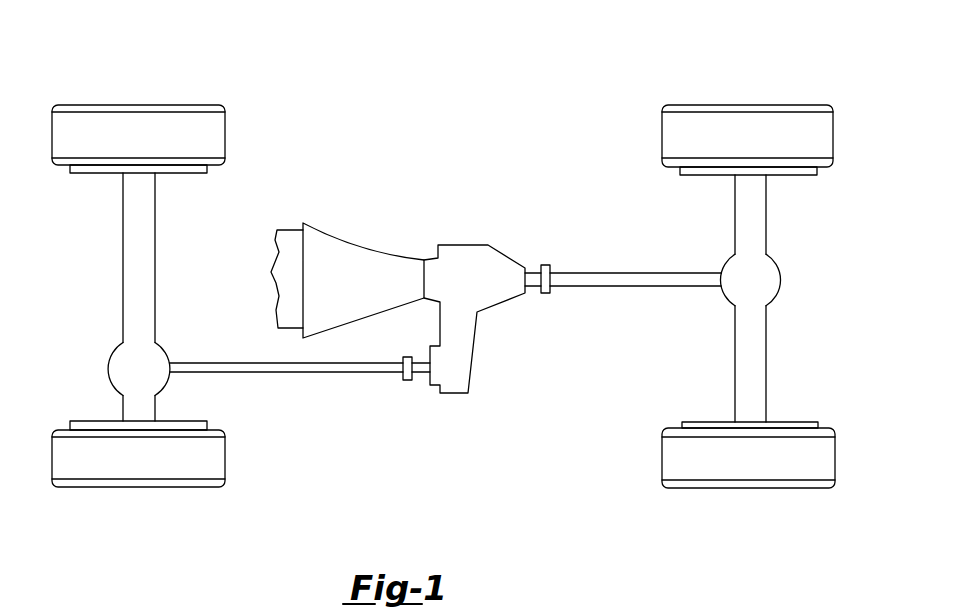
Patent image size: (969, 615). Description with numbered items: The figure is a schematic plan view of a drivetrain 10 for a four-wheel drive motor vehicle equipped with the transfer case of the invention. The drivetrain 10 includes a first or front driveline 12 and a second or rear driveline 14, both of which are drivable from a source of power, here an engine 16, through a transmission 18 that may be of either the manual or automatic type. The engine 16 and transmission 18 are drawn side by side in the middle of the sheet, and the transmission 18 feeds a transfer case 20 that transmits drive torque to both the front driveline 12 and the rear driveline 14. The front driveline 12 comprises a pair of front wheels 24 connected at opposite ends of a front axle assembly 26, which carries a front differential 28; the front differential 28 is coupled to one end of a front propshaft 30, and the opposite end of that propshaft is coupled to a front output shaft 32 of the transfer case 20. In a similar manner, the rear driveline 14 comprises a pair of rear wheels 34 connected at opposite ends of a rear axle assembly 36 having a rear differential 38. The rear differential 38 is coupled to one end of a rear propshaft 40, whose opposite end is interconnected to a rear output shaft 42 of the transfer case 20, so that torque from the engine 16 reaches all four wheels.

The drivetrain 10 is at (453, 118).
The front driveline 12 is at (172, 292).
The rear driveline 14 is at (677, 247).
The engine 16 is at (285, 262).
The transmission 18 is at (372, 293).
The transfer case 20 is at (502, 305).
The front wheels 24 is at (92, 128).
The front axle assembly 26 is at (138, 224).
The front differential 28 is at (127, 355).
The front propshaft 30 is at (375, 370).
The front output shaft 32 is at (418, 371).
The rear wheels 34 is at (710, 143).
The rear axle assembly 36 is at (748, 206).
The rear differential 38 is at (762, 276).
The rear propshaft 40 is at (677, 280).
The rear output shaft 42 is at (535, 276).